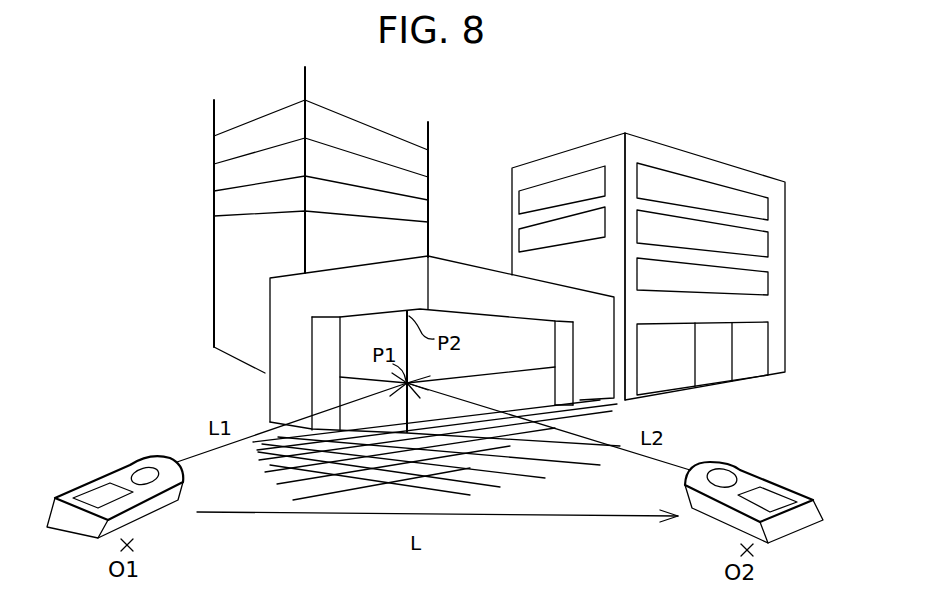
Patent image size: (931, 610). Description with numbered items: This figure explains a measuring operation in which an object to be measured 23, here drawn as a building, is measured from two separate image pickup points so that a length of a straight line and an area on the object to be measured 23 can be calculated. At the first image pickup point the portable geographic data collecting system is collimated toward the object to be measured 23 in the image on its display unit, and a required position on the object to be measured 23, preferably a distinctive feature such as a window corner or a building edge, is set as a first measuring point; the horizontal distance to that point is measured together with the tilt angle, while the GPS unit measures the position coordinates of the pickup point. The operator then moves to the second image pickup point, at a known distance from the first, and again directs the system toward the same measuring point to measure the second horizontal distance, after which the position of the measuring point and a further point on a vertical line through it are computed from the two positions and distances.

The object to be measured 23 is at (469, 265).